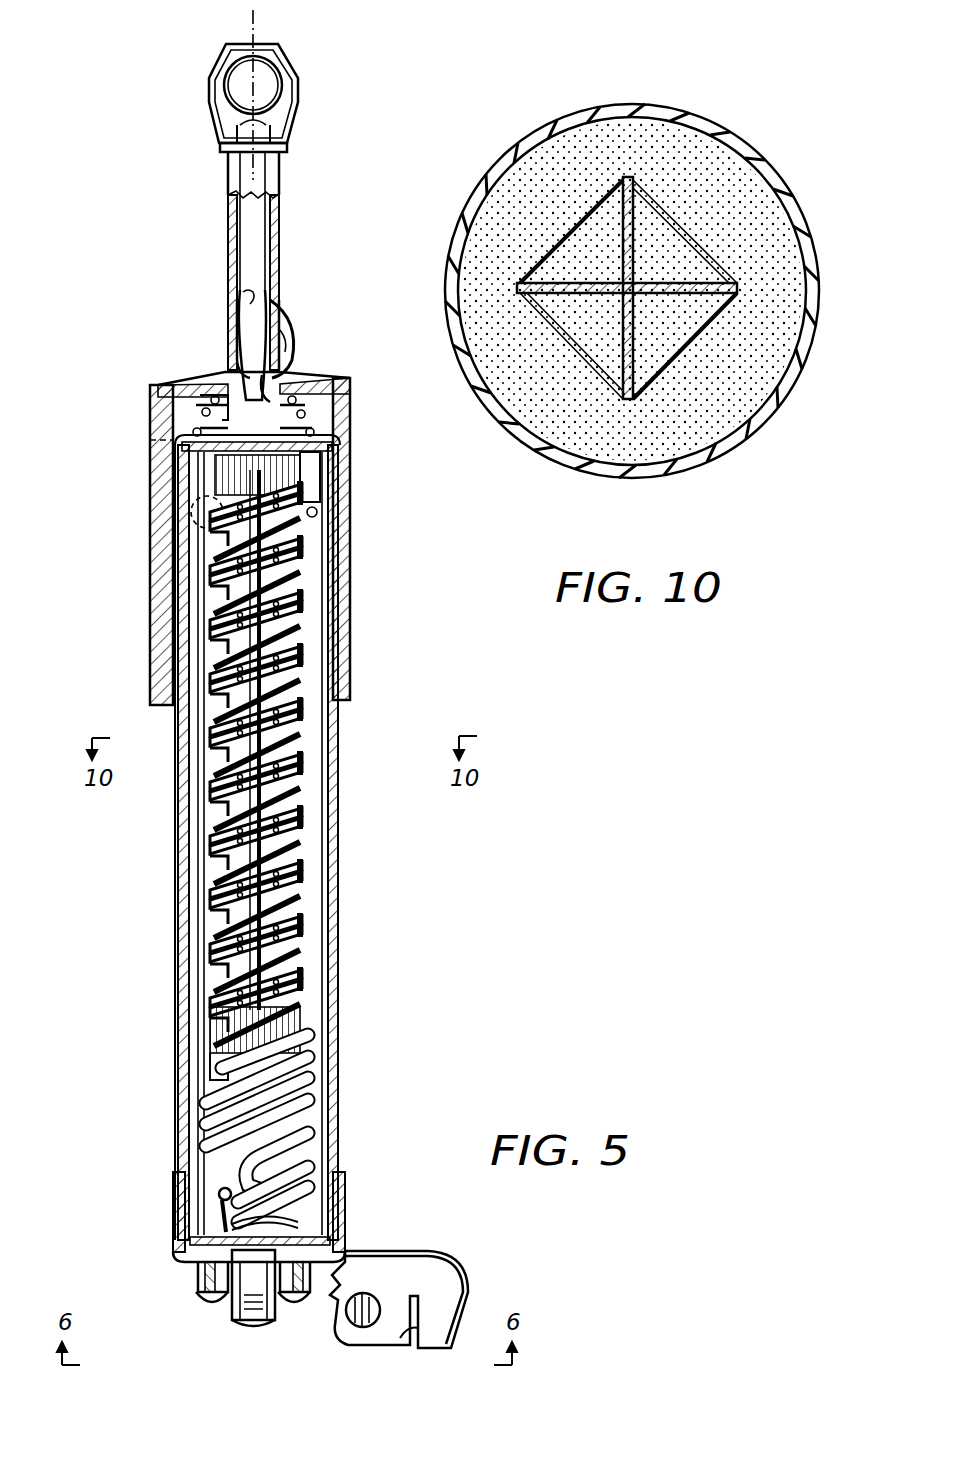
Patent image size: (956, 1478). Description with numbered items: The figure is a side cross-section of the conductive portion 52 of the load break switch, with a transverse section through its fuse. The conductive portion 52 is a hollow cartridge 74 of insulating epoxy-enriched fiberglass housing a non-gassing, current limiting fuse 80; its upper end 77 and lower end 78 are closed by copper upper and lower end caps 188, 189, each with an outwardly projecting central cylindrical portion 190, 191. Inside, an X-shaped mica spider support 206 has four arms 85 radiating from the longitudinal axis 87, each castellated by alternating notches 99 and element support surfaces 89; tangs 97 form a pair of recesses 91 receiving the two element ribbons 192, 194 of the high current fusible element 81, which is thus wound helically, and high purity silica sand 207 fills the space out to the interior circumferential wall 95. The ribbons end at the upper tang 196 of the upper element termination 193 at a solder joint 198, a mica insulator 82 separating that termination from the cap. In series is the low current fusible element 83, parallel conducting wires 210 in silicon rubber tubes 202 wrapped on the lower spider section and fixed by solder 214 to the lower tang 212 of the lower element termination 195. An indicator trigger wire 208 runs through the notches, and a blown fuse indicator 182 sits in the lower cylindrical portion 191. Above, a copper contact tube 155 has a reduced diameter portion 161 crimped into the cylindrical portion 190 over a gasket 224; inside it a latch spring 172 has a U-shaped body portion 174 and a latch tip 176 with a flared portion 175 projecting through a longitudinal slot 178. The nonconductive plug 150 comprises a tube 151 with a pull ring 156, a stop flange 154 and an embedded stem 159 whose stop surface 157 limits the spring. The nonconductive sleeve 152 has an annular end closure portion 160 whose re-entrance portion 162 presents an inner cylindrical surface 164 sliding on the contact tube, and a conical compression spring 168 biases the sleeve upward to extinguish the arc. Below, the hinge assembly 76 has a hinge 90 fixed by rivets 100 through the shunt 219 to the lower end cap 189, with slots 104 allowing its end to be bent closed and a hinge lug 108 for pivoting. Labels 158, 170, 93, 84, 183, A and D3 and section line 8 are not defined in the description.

In FIG. 5, the longitudinal axis 87 is at (252, 40).
In FIG. 5, the pull ring 156 is at (270, 52).
In FIG. 5, the eye opening 158 is at (270, 92).
In FIG. 5, the stop flange 154 is at (280, 158).
In FIG. 5, the tube 151 is at (226, 185).
In FIG. 5, the nonconductive plug 150 is at (280, 185).
In FIG. 5, the stem 159 is at (248, 232).
In FIG. 5, the stop surface 157 is at (243, 320).
In FIG. 5, the flared portion 175 is at (236, 345).
In FIG. 5, the contact tube 155 is at (282, 278).
In FIG. 5, the latch spring 172 is at (288, 320).
In FIG. 5, the longitudinal slot 178 is at (291, 327).
In FIG. 5, the latch tip 176 is at (286, 340).
In FIG. 5, the re-entrance portion 162 is at (284, 388).
In FIG. 5, the U-shaped body portion 174 is at (230, 400).
In FIG. 5, the annular end closure portion 160 is at (330, 386).
In FIG. 5, the inner cylindrical surface 164 is at (300, 402).
In FIG. 5, the reduced diameter portion 161 is at (295, 416).
In FIG. 5, the conical compression spring 168 is at (275, 428).
In FIG. 5, the central cylindrical portion 190 is at (225, 437).
In FIG. 5, the mica insulator 82 is at (300, 442).
In FIG. 5, the upper end 77 is at (190, 458).
In FIG. 5, the bushing 170 is at (300, 462).
In FIG. 5, the gasket 224 is at (232, 480).
In FIG. 5, the solder joint 198 is at (315, 482).
In FIG. 5, the upper element termination 193 is at (232, 496).
In FIG. 5, the upper tang 196 is at (318, 512).
In FIG. 5, the upper end cap 188 is at (196, 528).
In FIG. 5, the detail area A is at (206, 530).
In FIG. 5, the recesses 91 is at (296, 545).
In FIG. 5, the diameter D3 is at (300, 568).
In FIG. 10, the diameter D3 is at (575, 348).
In FIG. 5, the element support surfaces 89 is at (288, 590).
In FIG. 5, the high current fusible element 81 is at (292, 608).
In FIG. 5, the notch 99 is at (290, 625).
In FIG. 5, the cross arm 93 is at (283, 645).
In FIG. 10, the cross arm 93 is at (562, 320).
In FIG. 5, the nonconductive sleeve 152 is at (342, 692).
In FIG. 5, the arms 85 is at (300, 695).
In FIG. 10, the arms 85 is at (640, 325).
In FIG. 5, the interior circumferential wall 95 is at (322, 715).
In FIG. 10, the interior circumferential wall 95 is at (755, 422).
In FIG. 5, the conductive portion 52 is at (332, 740).
In FIG. 5, the fuse 80 is at (312, 764).
In FIG. 5, the element ribbon 192 is at (300, 812).
In FIG. 10, the element ribbon 192 is at (705, 242).
In FIG. 5, the element ribbon 194 is at (300, 836).
In FIG. 5, the spider support 206 is at (288, 855).
In FIG. 10, the spider support 206 is at (618, 219).
In FIG. 5, the cartridge 74 is at (334, 925).
In FIG. 10, the cartridge 74 is at (722, 130).
In FIG. 5, the indicator trigger wire 208 is at (292, 965).
In FIG. 5, the silicon rubber tubes 202 is at (292, 1032).
In FIG. 5, the low current fusible element 83 is at (306, 1052).
In FIG. 5, the section line 8 is at (193, 1045).
In FIG. 5, the lower end 78 is at (332, 1162).
In FIG. 5, the lower end cap 189 is at (340, 1195).
In FIG. 5, the solder 214 is at (218, 1198).
In FIG. 5, the lower tang 212 is at (228, 1226).
In FIG. 5, the conducting wires 210 is at (292, 1226).
In FIG. 5, the lower element termination 195 is at (196, 1242).
In FIG. 5, the bottom plate 84 is at (332, 1240).
In FIG. 5, the rivets 100 is at (208, 1275).
In FIG. 5, the blown fuse indicator 182 is at (255, 1325).
In FIG. 5, the bolt shank 183 is at (220, 1300).
In FIG. 5, the central cylindrical portion 191 is at (222, 1312).
In FIG. 5, the hinge assembly 76 is at (415, 1254).
In FIG. 5, the shunt 219 is at (470, 1280).
In FIG. 5, the hinge lug 108 is at (370, 1300).
In FIG. 5, the hinge 90 is at (325, 1302).
In FIG. 5, the slots 104 is at (412, 1345).
In FIG. 10, the high purity silica sand 207 is at (742, 168).
In FIG. 10, the tangs 97 is at (630, 405).